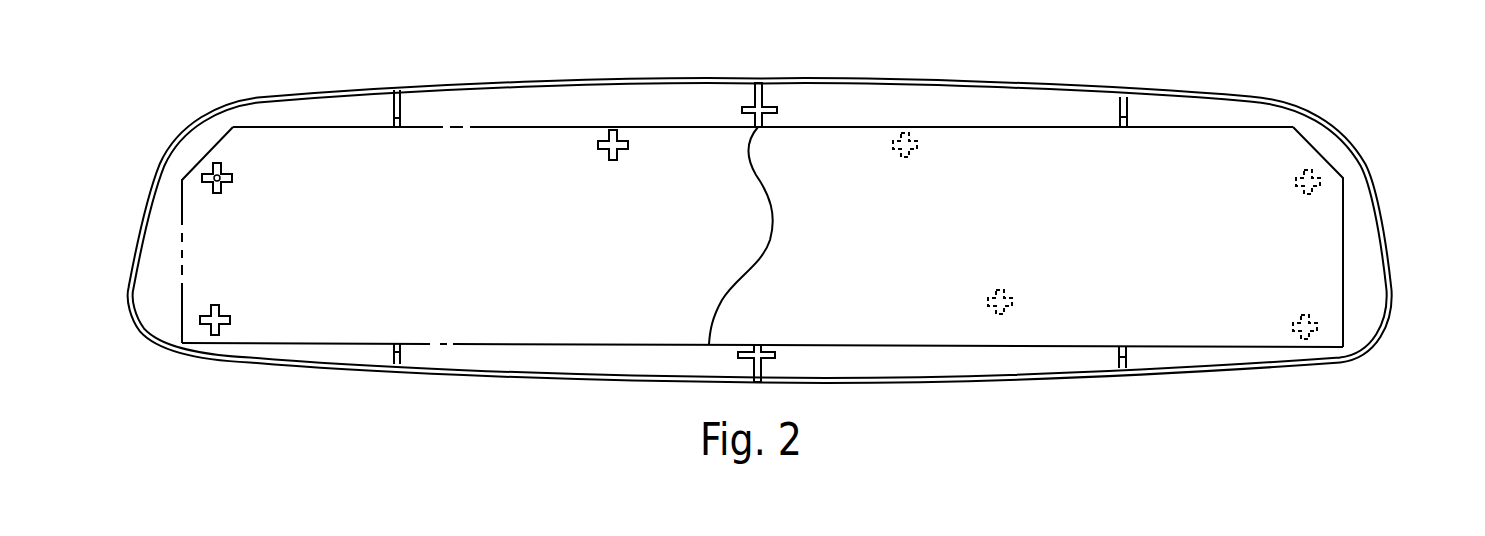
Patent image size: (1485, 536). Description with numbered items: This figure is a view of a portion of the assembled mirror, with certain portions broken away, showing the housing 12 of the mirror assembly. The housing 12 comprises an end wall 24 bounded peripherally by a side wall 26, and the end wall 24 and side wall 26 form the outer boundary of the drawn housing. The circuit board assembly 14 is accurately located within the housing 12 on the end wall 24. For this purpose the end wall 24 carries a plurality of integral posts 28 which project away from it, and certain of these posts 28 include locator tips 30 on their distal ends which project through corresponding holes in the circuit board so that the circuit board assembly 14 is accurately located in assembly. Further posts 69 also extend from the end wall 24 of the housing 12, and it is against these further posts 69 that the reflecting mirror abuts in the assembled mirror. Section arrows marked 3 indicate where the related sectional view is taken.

The mirror frame 12 is at (1318, 120).
The lower frame rail 14 is at (833, 345).
The upper frame rail 24 is at (935, 107).
The end frame portion 26 is at (1392, 262).
The cross-shaped apertures 28 is at (223, 312).
The cross-shaped fastener 30 is at (223, 173).
The clips 69 is at (403, 97).
The section line 3- 3 is at (120, 227).